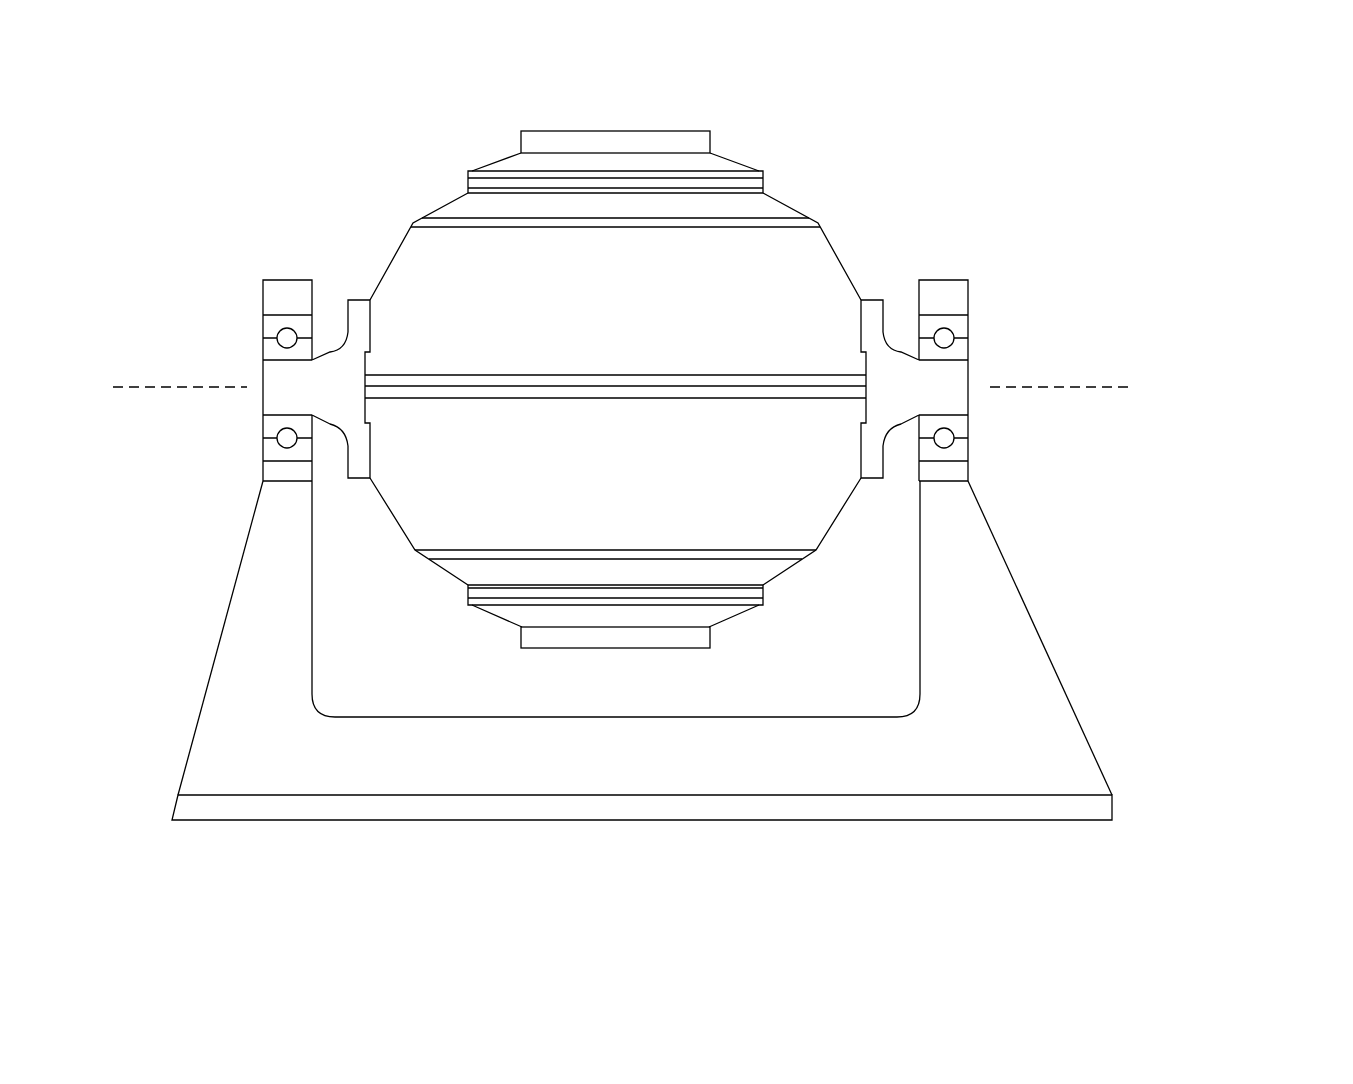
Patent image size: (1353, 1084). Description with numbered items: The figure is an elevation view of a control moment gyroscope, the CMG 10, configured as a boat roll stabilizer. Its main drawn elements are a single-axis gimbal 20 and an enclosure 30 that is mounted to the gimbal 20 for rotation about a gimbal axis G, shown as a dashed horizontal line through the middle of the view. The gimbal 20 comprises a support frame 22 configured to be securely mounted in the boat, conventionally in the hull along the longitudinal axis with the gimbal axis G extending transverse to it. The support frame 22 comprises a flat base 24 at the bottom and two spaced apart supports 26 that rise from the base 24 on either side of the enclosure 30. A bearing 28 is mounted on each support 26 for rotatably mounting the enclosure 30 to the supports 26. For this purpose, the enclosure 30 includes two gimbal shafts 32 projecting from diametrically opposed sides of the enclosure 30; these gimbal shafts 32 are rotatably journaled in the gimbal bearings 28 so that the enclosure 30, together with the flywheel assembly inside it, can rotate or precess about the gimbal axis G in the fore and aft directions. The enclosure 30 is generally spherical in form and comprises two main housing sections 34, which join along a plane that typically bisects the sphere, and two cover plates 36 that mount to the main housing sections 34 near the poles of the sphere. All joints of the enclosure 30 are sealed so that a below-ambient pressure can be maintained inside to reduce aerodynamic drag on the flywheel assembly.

The CMG 10 is at (958, 98).
The single-axis gimbal 20 is at (1207, 393).
The support frame 22 is at (1110, 735).
The base 24 is at (823, 822).
The supports 26 is at (250, 607).
The bearing 28 is at (273, 330).
The enclosure 30 is at (830, 202).
The gimbal shafts 32 is at (285, 380).
The main housing sections 34 is at (631, 318).
The cover plates 36 is at (540, 163).